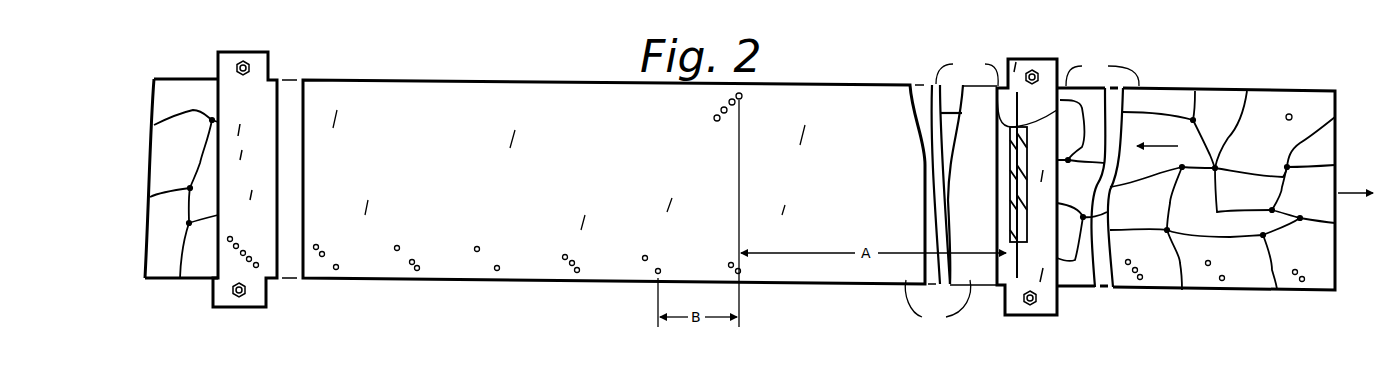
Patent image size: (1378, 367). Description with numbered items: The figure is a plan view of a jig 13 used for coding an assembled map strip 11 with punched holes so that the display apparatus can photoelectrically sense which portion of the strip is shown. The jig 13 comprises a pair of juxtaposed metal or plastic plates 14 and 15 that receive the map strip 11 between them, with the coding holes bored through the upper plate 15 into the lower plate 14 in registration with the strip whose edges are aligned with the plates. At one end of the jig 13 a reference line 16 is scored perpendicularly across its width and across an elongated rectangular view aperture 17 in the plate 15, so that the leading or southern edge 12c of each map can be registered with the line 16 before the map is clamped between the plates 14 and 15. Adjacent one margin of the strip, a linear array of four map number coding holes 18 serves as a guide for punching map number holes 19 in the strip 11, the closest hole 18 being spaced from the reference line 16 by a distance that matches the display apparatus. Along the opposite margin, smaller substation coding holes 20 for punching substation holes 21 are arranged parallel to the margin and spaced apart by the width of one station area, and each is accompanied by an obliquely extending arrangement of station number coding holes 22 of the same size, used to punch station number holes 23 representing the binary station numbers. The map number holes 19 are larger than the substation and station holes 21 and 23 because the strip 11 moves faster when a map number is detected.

The map strip 11 is at (162, 76).
The southern edge 12c is at (1009, 178).
The jig 13 is at (433, 78).
The lower plate 14 is at (943, 158).
The upper plate 15 is at (937, 303).
The reference line 16 is at (1018, 107).
The view aperture 17 is at (1025, 220).
The map number coding holes 18 is at (714, 118).
The map number holes 19 is at (1288, 113).
The substation coding holes 20 is at (254, 266).
The substation hole 21 is at (1142, 276).
The station number coding holes 22 is at (249, 257).
The station number holes 23 is at (1137, 268).